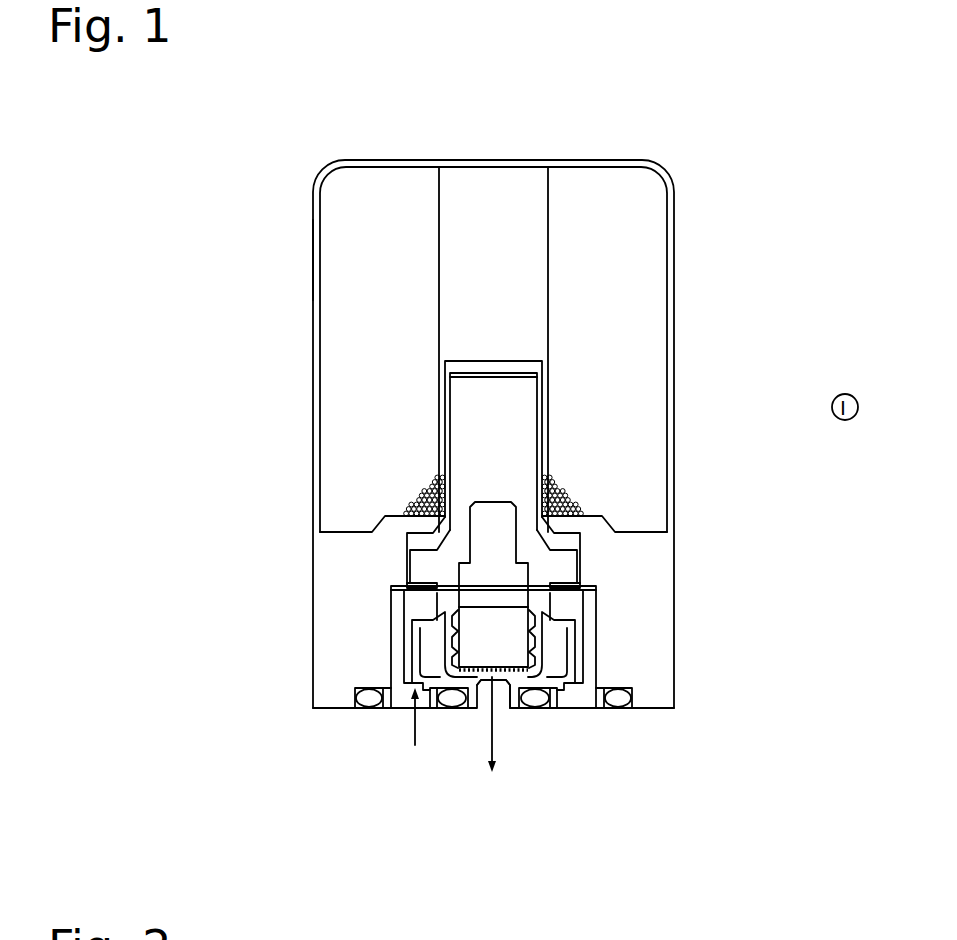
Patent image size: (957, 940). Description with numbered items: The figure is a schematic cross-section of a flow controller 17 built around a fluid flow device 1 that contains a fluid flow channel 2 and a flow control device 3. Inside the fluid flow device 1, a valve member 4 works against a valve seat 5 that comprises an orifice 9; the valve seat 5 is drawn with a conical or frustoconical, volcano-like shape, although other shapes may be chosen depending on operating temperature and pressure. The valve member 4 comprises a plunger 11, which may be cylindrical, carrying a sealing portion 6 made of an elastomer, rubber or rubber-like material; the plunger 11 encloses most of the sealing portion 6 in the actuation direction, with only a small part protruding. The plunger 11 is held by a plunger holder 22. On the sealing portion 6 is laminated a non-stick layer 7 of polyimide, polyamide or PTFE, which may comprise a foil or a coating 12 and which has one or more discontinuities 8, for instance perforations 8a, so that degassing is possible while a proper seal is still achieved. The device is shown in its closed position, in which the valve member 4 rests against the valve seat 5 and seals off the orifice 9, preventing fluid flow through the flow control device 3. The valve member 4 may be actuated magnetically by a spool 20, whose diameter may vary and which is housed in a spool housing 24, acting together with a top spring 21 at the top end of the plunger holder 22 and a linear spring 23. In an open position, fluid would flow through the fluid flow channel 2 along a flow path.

The fluid flow device 1 is at (603, 103).
The fluid flow channel 2 is at (415, 655).
The flow control device 3 is at (548, 568).
The valve member 4 is at (480, 593).
The valve seat 5 is at (515, 681).
The sealing portion 6 is at (497, 637).
The non-stick layer 7 is at (487, 678).
The discontinuities 8 is at (443, 740).
The perforations 8a is at (483, 675).
The orifice 9 is at (497, 680).
The plunger 11 is at (505, 620).
The coating 12 is at (527, 672).
The flow controller 17 is at (705, 265).
The spool 20 is at (563, 493).
The top spring 21 is at (517, 375).
The plunger holder 22 is at (470, 423).
The linear spring 23 is at (590, 585).
The spool housing 24 is at (318, 245).